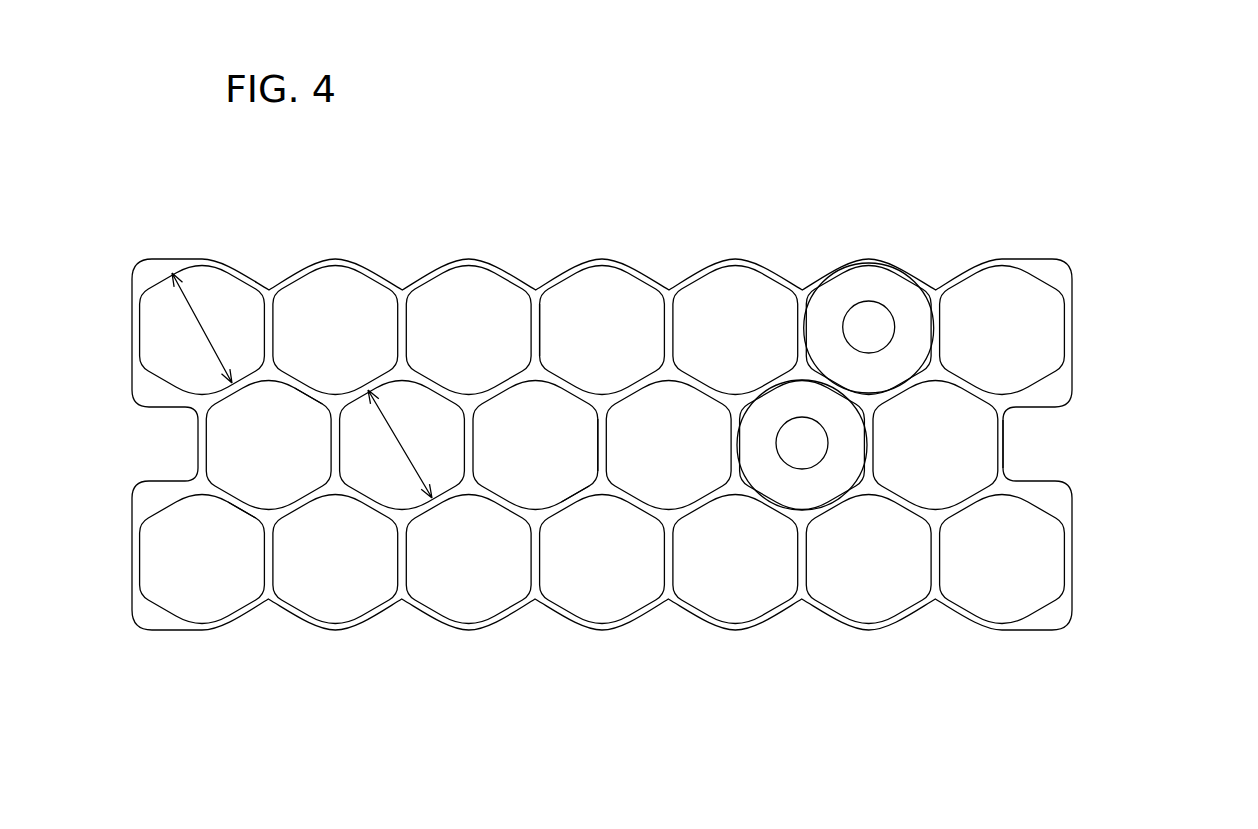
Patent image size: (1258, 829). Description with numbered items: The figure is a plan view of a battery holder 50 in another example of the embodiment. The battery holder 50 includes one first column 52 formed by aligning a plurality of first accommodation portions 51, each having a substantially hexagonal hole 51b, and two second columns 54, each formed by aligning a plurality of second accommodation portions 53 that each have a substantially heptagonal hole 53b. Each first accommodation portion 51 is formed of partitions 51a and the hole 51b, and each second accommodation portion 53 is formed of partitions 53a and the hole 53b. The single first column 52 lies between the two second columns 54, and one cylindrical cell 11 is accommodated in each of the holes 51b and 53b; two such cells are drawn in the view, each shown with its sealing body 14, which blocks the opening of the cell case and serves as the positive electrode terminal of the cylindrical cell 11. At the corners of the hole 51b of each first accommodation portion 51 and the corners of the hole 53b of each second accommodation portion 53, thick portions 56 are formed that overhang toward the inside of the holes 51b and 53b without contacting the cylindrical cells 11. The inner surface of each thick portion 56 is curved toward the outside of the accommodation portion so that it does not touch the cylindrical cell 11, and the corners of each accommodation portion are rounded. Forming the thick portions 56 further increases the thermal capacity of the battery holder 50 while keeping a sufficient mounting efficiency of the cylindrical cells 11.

The battery holder 50 is at (1118, 108).
The cylindrical cell 11 is at (831, 299).
The sealing body 14 is at (878, 320).
The first accommodation portion 51 is at (515, 712).
The partitions 51a is at (561, 492).
The substantially hexagonal hole 51b is at (603, 445).
The first column 52 is at (1018, 443).
The second accommodation portion 53 is at (507, 167).
The partitions 53a is at (592, 262).
The substantially heptagonal hole 53b is at (536, 330).
The second column 54 is at (1086, 320).
The thick portion 56 is at (262, 522).